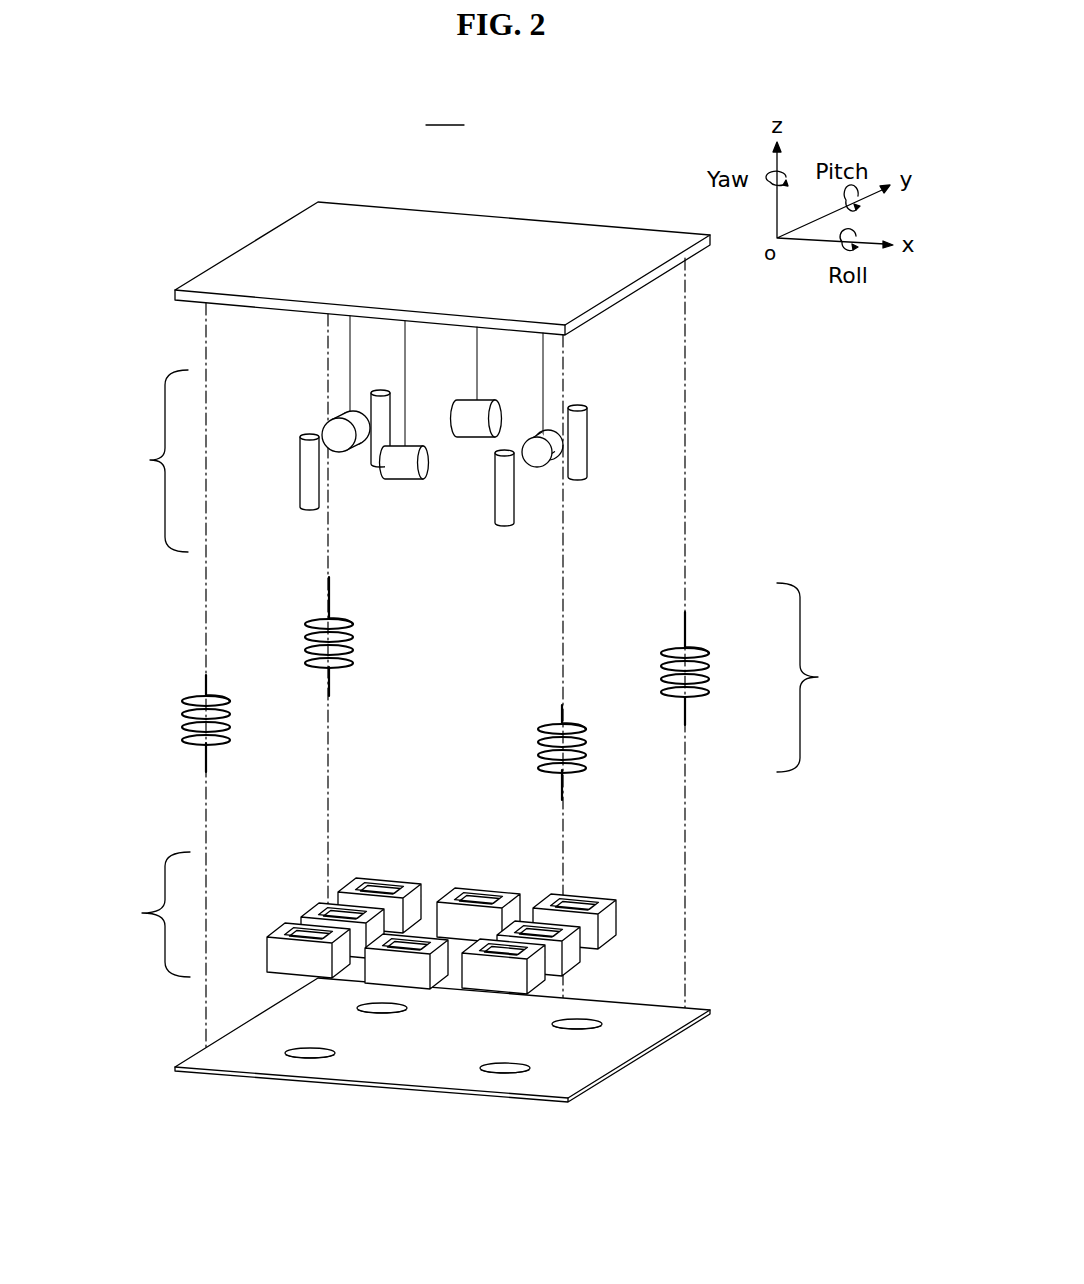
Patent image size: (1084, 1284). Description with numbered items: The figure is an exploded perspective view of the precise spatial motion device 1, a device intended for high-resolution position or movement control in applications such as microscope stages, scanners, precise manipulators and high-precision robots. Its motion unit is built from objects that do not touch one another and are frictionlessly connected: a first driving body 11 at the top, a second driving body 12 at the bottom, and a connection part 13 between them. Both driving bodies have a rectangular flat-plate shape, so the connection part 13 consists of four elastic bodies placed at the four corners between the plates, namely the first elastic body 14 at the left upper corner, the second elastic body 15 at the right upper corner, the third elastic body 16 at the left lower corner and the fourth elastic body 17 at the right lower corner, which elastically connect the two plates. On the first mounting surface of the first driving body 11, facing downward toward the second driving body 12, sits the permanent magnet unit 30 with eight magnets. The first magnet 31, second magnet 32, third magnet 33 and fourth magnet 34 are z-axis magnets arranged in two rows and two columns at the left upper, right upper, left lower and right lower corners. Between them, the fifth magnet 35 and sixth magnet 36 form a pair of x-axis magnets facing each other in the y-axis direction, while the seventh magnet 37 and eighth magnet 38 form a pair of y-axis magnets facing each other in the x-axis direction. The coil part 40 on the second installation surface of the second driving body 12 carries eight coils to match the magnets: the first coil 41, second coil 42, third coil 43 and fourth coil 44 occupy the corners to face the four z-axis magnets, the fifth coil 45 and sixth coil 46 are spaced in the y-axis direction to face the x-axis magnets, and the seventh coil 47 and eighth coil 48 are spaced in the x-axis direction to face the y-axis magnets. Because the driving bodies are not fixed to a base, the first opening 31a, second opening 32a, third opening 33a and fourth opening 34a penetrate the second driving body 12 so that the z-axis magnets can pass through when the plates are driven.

The precise spatial motion device 1 is at (445, 108).
The first driving body 11 is at (527, 235).
The second driving body 12 is at (593, 1070).
The connection part 13 is at (817, 677).
The first elastic body 14 is at (350, 622).
The second elastic body 15 is at (700, 648).
The third elastic body 16 is at (218, 738).
The fourth elastic body 17 is at (573, 770).
The permanent magnet unit 30 is at (145, 461).
The first magnet 31 is at (382, 393).
The second magnet 32 is at (578, 440).
The third magnet 33 is at (307, 473).
The fourth magnet 34 is at (507, 503).
The fifth magnet 35 is at (467, 412).
The sixth magnet 36 is at (403, 468).
The seventh magnet 37 is at (333, 433).
The eighth magnet 38 is at (540, 457).
The coil part 40 is at (147, 914).
The first coil 41 is at (392, 882).
The second coil 42 is at (588, 898).
The third coil 43 is at (275, 930).
The fourth coil 44 is at (543, 977).
The fifth coil 45 is at (490, 890).
The sixth coil 46 is at (402, 970).
The seventh coil 47 is at (313, 908).
The eighth coil 48 is at (575, 950).
The first opening 31a is at (382, 1010).
The second opening 32a is at (593, 1027).
The third opening 33a is at (310, 1055).
The fourth opening 34a is at (505, 1070).